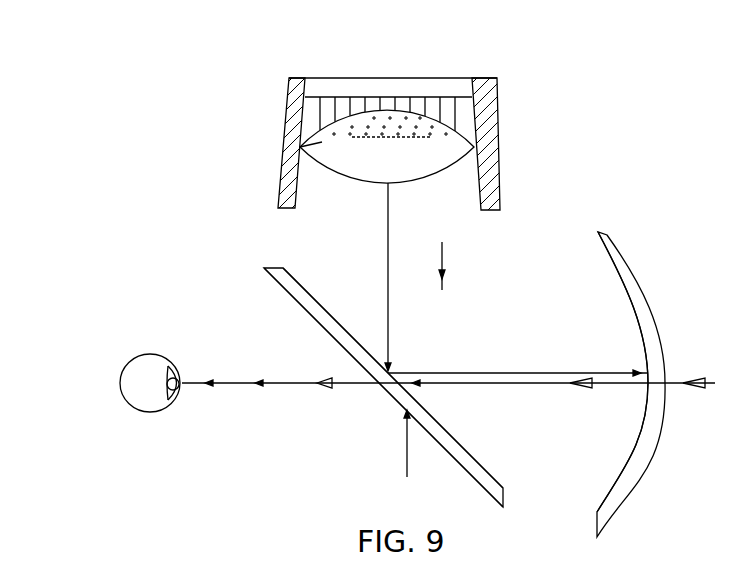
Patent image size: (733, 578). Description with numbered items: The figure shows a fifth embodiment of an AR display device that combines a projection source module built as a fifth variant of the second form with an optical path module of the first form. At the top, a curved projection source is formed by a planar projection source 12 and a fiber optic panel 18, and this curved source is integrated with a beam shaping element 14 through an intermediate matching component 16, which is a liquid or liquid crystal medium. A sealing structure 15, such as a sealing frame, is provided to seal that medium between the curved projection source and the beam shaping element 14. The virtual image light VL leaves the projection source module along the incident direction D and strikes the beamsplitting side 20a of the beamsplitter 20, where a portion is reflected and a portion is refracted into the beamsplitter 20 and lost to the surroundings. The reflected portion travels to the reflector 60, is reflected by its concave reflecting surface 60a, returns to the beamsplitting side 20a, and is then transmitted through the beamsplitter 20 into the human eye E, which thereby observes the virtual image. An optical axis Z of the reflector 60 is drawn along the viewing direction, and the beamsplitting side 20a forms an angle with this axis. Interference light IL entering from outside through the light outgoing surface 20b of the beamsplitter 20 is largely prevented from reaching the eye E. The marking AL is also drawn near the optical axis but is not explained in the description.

The projection source 12 is at (358, 88).
The beam shaping element 14 is at (432, 142).
The sealing structure 15 is at (487, 103).
The intermediate matching component 16 is at (338, 128).
The fiber optic panel 18 is at (392, 105).
The beamsplitter 20 is at (265, 269).
The beamsplitting side 20a is at (335, 319).
The light outgoing surface 20b is at (383, 388).
The reflector 60 is at (625, 275).
The reflecting surface 60a is at (604, 257).
The human eye E is at (148, 360).
The virtual image light VL is at (403, 277).
The interference light IL is at (394, 443).
The axis light AL is at (548, 363).
The incident direction D is at (442, 253).
The optical axis Z is at (456, 384).